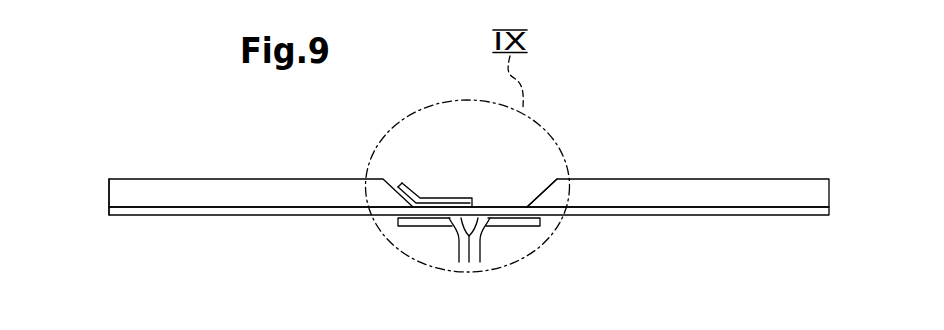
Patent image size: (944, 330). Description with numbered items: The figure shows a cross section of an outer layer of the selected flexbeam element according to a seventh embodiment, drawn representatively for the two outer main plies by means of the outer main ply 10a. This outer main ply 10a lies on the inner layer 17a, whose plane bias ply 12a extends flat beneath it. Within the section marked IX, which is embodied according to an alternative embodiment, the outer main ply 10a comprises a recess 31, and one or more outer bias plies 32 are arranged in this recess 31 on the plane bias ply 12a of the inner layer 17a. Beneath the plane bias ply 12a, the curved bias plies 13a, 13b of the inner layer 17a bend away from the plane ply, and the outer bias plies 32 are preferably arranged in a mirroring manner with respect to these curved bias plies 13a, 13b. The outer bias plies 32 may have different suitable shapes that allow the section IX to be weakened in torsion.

The outer main ply 10a is at (231, 192).
The plane bias ply 12a is at (715, 217).
The inner layer 17a is at (126, 232).
The recess 31 is at (528, 183).
The outer bias plies 32 is at (437, 200).
The curved bias ply 13a is at (450, 228).
The curved bias ply 13b is at (487, 228).